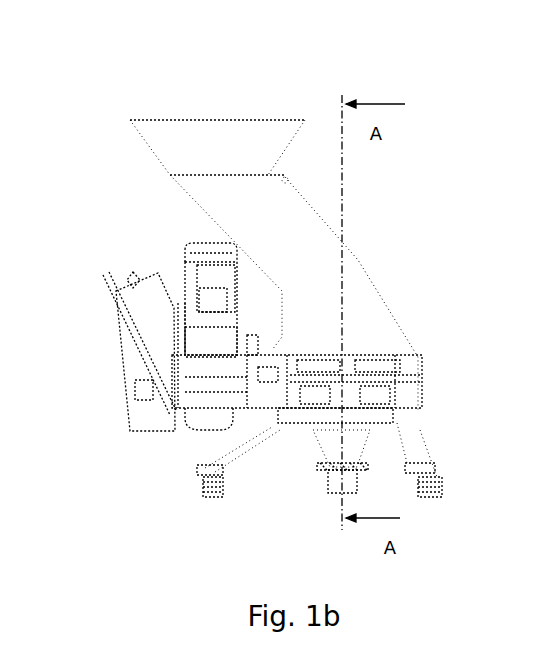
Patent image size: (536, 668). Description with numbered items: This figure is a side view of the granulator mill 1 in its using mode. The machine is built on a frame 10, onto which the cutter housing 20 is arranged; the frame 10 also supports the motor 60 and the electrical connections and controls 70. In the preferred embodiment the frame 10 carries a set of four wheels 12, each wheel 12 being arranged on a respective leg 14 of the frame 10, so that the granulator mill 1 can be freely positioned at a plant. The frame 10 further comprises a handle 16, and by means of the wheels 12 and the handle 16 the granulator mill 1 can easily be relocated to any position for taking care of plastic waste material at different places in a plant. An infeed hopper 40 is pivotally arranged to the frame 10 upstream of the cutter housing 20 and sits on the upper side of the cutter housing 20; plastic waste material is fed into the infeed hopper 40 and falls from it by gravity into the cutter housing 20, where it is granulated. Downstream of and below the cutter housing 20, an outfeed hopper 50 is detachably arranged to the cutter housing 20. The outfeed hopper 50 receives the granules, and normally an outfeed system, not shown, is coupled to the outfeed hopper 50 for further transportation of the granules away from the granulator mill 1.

The granulator mill 1 is at (166, 93).
The frame 10 is at (417, 397).
The wheels 12 is at (197, 490).
The leg 14 is at (225, 445).
The handle 16 is at (105, 287).
The cutter housing 20 is at (390, 380).
The infeed hopper 40 is at (360, 278).
The outfeed hopper 50 is at (330, 438).
The motor 60 is at (190, 253).
The electrical connections and controls 70 is at (128, 372).